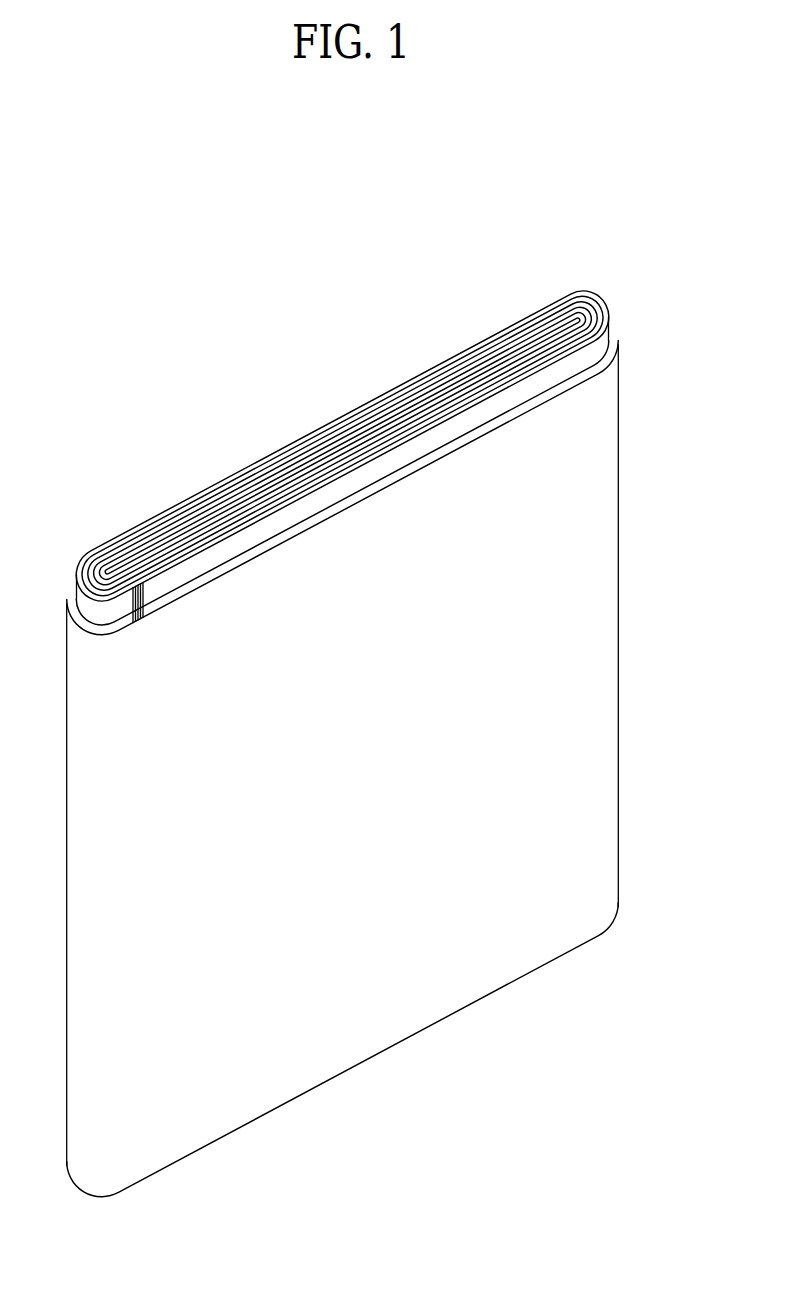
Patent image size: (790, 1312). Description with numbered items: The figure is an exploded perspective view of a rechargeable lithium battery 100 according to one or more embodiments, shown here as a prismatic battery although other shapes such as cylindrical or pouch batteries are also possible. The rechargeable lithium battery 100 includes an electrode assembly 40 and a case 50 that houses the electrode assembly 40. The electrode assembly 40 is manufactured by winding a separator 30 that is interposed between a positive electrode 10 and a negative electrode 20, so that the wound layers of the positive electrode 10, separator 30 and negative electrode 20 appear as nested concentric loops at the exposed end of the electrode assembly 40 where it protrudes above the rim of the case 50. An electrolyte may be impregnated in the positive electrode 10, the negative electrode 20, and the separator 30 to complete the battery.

The rechargeable lithium battery 100 is at (318, 219).
The positive electrode 10 is at (607, 308).
The negative electrode 20 is at (568, 305).
The separator 30 is at (590, 300).
The electrode assembly 40 is at (360, 428).
The case 50 is at (600, 613).